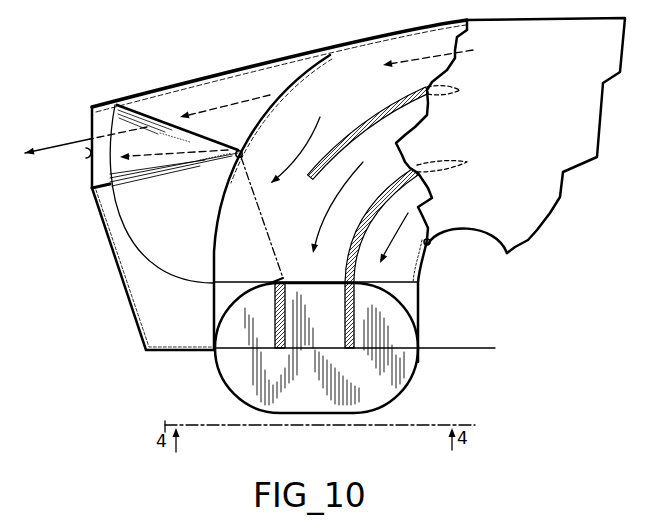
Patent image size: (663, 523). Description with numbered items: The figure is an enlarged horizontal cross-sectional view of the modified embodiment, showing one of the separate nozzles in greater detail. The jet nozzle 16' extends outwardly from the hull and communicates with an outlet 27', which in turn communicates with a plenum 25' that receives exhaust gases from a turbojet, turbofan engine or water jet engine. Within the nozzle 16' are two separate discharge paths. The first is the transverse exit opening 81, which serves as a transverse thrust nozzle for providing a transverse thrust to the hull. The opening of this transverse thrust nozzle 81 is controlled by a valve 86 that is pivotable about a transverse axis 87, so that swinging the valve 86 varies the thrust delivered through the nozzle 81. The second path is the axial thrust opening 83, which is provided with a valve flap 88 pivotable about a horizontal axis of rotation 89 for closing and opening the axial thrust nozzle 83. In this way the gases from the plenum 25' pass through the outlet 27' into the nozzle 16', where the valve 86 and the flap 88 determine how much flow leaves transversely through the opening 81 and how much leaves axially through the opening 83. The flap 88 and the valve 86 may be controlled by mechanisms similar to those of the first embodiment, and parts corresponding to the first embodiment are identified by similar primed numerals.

The jet nozzle 16' is at (130, 245).
The transverse exit opening 81 is at (86, 153).
The valve 86 is at (162, 118).
The transverse axis 87 is at (247, 151).
The axial thrust opening 83 is at (216, 349).
The valve flap 88 is at (400, 383).
The horizontal axis of rotation 89 is at (433, 348).
The outlet 27' is at (465, 219).
The plenum 25' is at (510, 135).